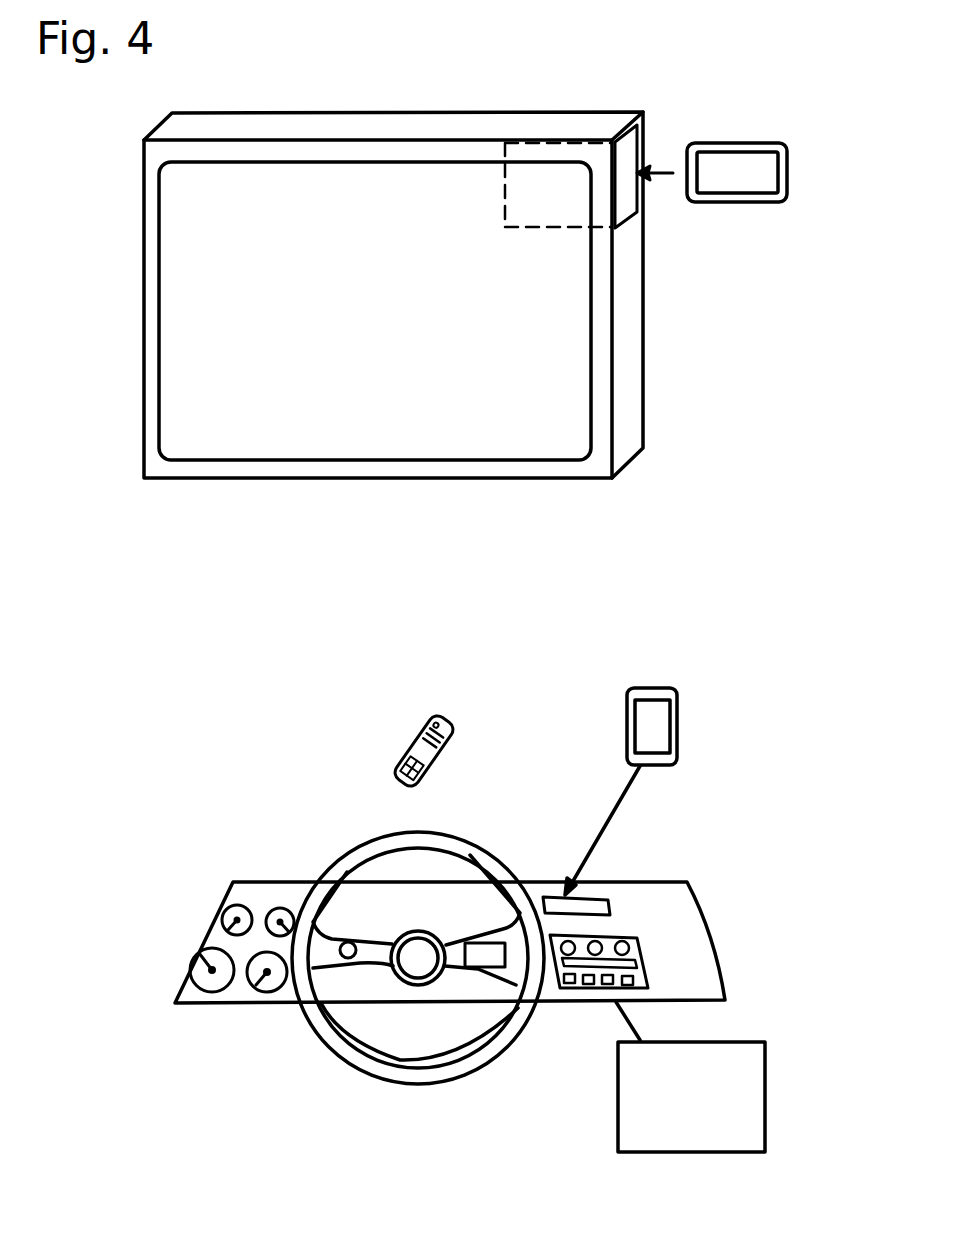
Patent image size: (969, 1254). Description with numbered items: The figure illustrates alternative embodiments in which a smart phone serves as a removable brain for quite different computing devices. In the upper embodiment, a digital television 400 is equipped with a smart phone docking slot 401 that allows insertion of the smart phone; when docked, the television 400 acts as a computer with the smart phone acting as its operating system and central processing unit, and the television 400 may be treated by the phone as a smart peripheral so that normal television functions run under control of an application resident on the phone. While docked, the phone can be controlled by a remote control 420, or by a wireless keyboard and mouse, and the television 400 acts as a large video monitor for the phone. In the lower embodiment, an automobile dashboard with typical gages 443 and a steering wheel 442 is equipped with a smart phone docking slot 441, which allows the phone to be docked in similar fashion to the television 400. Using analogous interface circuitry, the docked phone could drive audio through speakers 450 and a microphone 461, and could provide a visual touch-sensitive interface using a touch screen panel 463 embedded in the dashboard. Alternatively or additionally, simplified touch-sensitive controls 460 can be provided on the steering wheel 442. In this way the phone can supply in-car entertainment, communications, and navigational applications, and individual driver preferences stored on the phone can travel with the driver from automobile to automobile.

The digital television 400 is at (152, 481).
The smart phone docking slot 401 is at (628, 218).
The remote control 420 is at (438, 758).
The smart phone docking slot 441 is at (594, 892).
The steering wheel 442 is at (468, 837).
The gages 443 is at (238, 904).
The speakers 450 is at (766, 1090).
The touch-sensitive controls 460 is at (473, 968).
The microphone 461 is at (343, 957).
The touch screen panel 463 is at (576, 990).